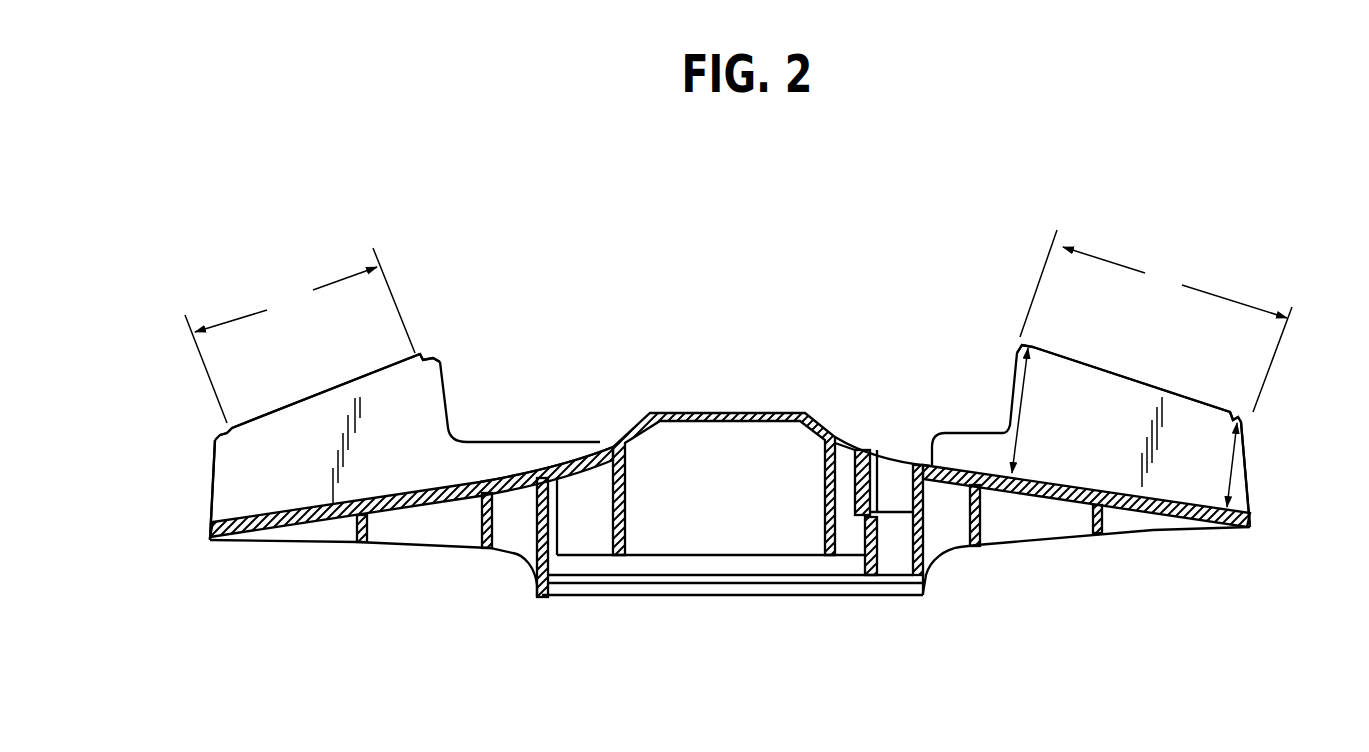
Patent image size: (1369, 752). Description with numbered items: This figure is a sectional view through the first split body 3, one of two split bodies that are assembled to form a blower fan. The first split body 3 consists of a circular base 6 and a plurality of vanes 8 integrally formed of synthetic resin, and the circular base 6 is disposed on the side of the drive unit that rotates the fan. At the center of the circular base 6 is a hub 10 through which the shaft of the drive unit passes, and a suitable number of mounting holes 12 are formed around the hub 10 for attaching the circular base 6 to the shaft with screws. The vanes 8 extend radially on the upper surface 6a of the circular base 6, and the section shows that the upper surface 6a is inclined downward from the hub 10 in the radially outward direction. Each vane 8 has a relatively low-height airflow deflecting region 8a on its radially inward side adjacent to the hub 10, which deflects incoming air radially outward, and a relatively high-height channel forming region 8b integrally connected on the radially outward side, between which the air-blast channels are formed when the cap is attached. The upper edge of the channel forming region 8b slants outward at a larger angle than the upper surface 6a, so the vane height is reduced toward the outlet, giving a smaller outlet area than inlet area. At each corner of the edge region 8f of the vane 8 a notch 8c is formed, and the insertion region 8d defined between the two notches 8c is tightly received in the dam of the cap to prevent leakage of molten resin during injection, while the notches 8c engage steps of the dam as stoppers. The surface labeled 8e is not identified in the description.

The first split body 3 is at (1186, 243).
The circular base 6 is at (1073, 503).
The upper surface 6a is at (493, 477).
The vane 8 is at (230, 483).
The airflow deflecting region 8a is at (537, 457).
The channel forming region 8b is at (420, 427).
The notch 8c is at (225, 433).
The insertion region 8d is at (258, 425).
The end face 8e is at (297, 393).
The edge region 8f is at (350, 390).
The hub 10 is at (792, 417).
The mounting hole 12 is at (883, 497).